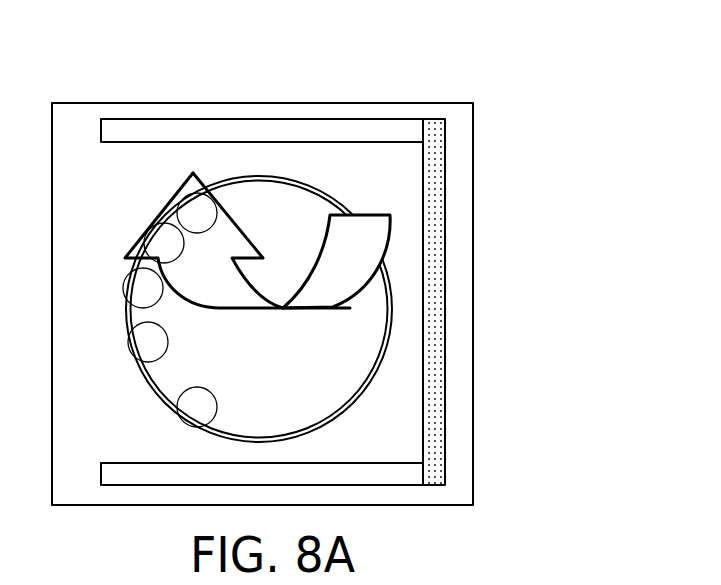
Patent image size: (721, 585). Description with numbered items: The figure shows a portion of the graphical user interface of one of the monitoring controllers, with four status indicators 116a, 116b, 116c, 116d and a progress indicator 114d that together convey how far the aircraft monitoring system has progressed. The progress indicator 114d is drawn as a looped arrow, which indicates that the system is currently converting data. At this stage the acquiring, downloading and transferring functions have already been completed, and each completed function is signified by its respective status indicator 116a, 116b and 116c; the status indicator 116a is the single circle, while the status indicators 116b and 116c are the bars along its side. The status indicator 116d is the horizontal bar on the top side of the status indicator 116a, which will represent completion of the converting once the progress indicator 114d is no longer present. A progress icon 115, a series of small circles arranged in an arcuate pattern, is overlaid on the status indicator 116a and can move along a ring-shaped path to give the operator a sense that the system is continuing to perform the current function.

The progress indicator 114d is at (367, 232).
The progress icon 115 is at (168, 338).
The status indicator 116a is at (380, 370).
The status indicator 116b is at (388, 477).
The status indicator 116c is at (428, 267).
The status indicator 116d is at (367, 130).